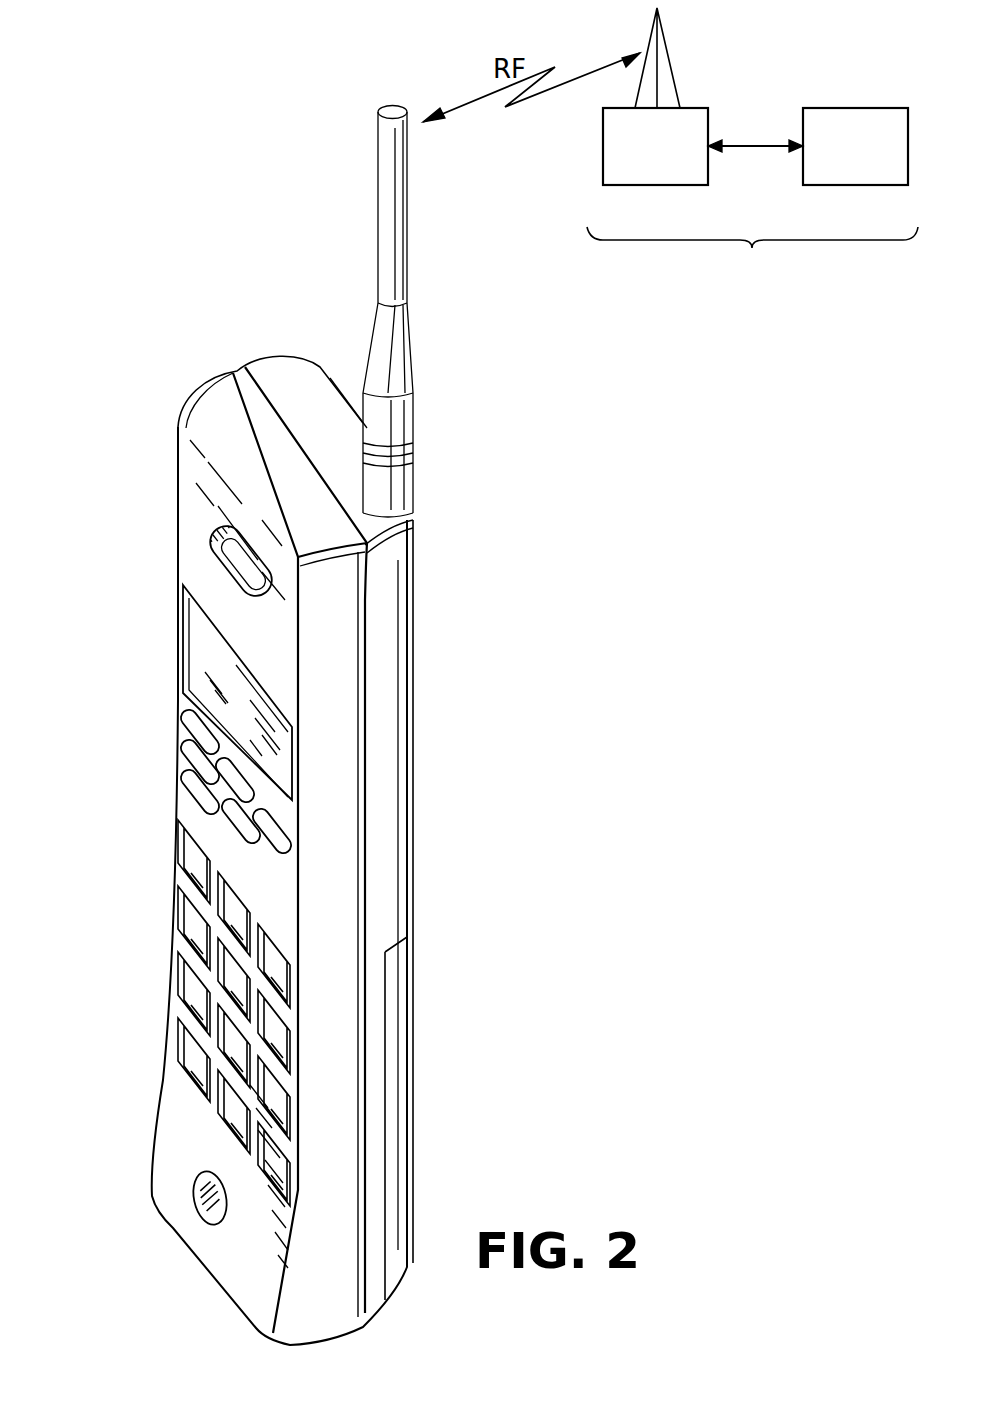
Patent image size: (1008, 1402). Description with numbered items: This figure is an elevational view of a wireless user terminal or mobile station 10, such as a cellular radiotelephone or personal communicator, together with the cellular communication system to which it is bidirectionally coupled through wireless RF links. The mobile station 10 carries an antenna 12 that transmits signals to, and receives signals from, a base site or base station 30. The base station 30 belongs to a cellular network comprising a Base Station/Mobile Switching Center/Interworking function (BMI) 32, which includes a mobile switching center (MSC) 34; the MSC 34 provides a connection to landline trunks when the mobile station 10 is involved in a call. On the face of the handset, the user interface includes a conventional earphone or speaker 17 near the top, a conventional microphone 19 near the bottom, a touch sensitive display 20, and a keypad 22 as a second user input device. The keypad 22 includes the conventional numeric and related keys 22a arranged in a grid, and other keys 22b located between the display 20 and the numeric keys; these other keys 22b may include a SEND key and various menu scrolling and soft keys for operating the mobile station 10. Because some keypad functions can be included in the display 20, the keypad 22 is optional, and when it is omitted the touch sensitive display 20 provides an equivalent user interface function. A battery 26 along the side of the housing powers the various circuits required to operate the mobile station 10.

The mobile station 10 is at (155, 367).
The antenna 12 is at (385, 192).
The speaker 17 is at (210, 548).
The microphone 19 is at (202, 1212).
The touch sensitive display 20 is at (203, 666).
The keypad 22 is at (201, 956).
The numeric and related keys 22a is at (232, 907).
The other keys 22b is at (190, 790).
The battery 26 is at (412, 1082).
The base station 30 is at (625, 185).
The Base Station/Mobile Switching Center/Interworking function (BMI) 32 is at (752, 274).
The mobile switching center (MSC) 34 is at (840, 185).